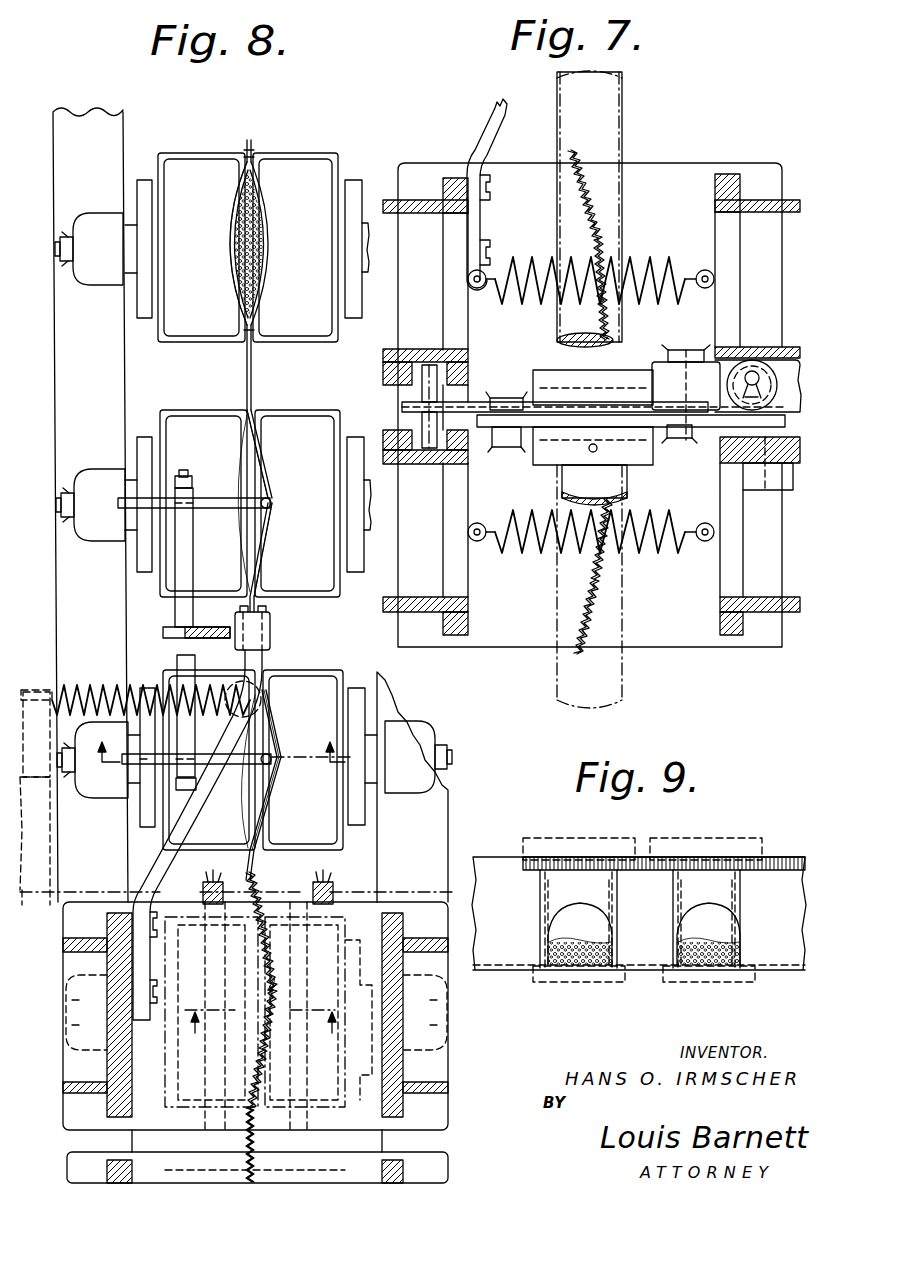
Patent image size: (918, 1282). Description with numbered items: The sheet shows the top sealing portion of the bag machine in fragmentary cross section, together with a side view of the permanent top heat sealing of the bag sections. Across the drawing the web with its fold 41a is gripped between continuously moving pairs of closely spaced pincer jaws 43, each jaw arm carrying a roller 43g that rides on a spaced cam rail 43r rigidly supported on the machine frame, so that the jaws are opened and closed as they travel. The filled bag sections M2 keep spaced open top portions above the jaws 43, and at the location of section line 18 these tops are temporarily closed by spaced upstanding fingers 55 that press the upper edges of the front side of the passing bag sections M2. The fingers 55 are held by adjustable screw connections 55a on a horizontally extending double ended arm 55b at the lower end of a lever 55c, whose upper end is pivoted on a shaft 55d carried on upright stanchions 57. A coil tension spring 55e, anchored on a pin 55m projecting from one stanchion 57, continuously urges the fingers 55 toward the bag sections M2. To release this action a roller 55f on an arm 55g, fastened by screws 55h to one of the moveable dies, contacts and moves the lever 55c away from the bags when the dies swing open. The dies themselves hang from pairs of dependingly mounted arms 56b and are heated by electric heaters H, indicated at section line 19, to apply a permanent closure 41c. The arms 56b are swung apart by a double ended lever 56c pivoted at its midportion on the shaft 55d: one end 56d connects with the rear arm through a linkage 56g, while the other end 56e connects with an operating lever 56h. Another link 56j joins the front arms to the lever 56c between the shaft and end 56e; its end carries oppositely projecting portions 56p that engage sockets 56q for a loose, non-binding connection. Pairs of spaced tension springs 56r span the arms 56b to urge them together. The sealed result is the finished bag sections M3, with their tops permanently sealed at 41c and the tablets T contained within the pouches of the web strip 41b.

In FIG. 8, the pincer jaws 43 is at (183, 175).
In FIG. 8, the roller 43g is at (90, 267).
In FIG. 8, the cam rails 43r is at (66, 408).
In FIG. 8, the web strip 41b is at (253, 153).
In FIG. 9, the web strip 41b is at (513, 856).
In FIG. 8, the permanent closure 41c is at (263, 982).
In FIG. 7, the permanent closure 41c is at (598, 222).
In FIG. 9, the permanent closure 41c is at (600, 856).
In FIG. 9, the fold 41a is at (520, 972).
In FIG. 8, the filled bag sections M2 is at (237, 187).
In FIG. 8, the bag sections M3 is at (272, 1047).
In FIG. 9, the bag sections M3 is at (568, 882).
In FIG. 8, the tablets T is at (253, 277).
In FIG. 9, the tablets T is at (585, 957).
In FIG. 8, the fingers 55 is at (272, 510).
In FIG. 8, the adjustable screw connections 55a is at (197, 460).
In FIG. 8, the double ended arm 55b is at (180, 577).
In FIG. 8, the lever 55c is at (197, 626).
In FIG. 7, the shaft 55d is at (620, 484).
In FIG. 8, the coil tension spring 55e is at (76, 695).
In FIG. 8, the roller 55f is at (272, 642).
In FIG. 8, the arm 55g is at (182, 803).
In FIG. 7, the arm 55g is at (480, 133).
In FIG. 8, the screws 55h is at (158, 995).
In FIG. 7, the screws 55h is at (492, 242).
In FIG. 8, the pin 55m is at (36, 690).
In FIG. 7, the arms 56b is at (458, 328).
In FIG. 7, the double ended lever 56c is at (570, 422).
In FIG. 7, the lever end 56d is at (492, 447).
In FIG. 7, the lever end 56e is at (693, 430).
In FIG. 7, the linkage 56g is at (710, 435).
In FIG. 7, the operating lever 56h is at (777, 358).
In FIG. 7, the link 56j is at (473, 405).
In FIG. 7, the oppositely projecting portions 56p is at (428, 349).
In FIG. 7, the sockets 56q is at (420, 383).
In FIG. 7, the tension springs 56r is at (633, 260).
In FIG. 8, the stanchions 57 is at (46, 878).
In FIG. 8, the section line 18 is at (220, 743).
In FIG. 8, the section line 19 is at (263, 1035).
In FIG. 8, the electric heaters H is at (299, 892).